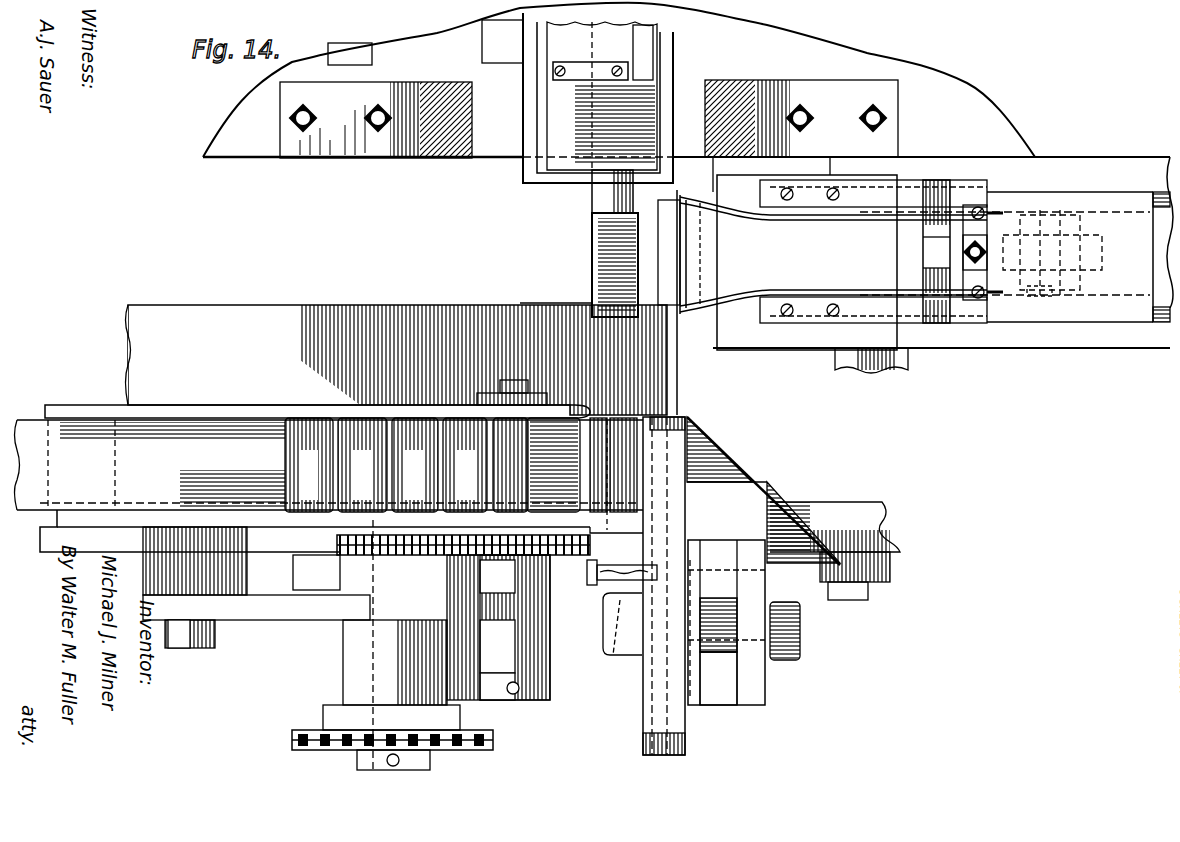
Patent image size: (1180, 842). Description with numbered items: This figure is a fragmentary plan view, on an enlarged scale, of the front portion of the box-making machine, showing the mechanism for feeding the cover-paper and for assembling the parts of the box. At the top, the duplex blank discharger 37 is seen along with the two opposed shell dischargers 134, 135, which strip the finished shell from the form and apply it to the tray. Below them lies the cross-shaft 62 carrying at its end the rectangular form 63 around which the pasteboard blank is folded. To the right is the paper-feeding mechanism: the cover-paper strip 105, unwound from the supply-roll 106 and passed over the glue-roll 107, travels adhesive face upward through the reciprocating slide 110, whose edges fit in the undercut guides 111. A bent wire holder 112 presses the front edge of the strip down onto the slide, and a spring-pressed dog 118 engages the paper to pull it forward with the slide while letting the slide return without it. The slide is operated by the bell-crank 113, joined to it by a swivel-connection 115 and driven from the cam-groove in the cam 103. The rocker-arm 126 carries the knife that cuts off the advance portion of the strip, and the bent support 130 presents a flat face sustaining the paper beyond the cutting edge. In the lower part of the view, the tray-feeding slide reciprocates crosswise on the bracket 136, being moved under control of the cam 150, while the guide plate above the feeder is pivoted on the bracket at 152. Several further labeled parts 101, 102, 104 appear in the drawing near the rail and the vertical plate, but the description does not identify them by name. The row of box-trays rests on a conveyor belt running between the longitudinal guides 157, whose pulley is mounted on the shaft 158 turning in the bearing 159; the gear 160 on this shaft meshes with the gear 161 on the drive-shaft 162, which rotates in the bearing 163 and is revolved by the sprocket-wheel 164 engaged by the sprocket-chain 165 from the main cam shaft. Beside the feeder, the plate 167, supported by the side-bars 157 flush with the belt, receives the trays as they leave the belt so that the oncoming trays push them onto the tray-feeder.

The duplex blank discharger 37 is at (533, 62).
The cross-shaft 62 is at (598, 200).
The rectangular form 63 is at (600, 268).
The plate 101 is at (613, 510).
The rail block 102 is at (592, 357).
The cam 103 is at (406, 465).
The plate 104 is at (667, 683).
The cover-paper strip 105 is at (667, 640).
The supply-roll 106 is at (737, 655).
The glue-roll 107 is at (717, 670).
The reciprocating slide 110 is at (902, 230).
The undercut guides 111 is at (1107, 165).
The bent wire holder 112 is at (690, 247).
The bell-crank 113 is at (1085, 247).
The swivel-connection 115 is at (1058, 290).
The spring-pressed dog 118 is at (927, 280).
The rocker-arm 126 is at (900, 373).
The bent support 130 is at (665, 273).
The shell discharger 134 is at (632, 218).
The shell discharger 135 is at (523, 183).
The bracket 136 is at (673, 475).
The cam 150 is at (329, 465).
The pivot 152 is at (650, 648).
The longitudinal guides 157 is at (223, 410).
The shaft 158 is at (537, 647).
The bearing 159 is at (550, 618).
The gear 160 is at (558, 553).
The gear 161 is at (338, 557).
The drive-shaft 162 is at (373, 662).
The bearing 163 is at (347, 637).
The sprocket-wheel 164 is at (393, 749).
The sprocket-chain 165 is at (478, 728).
The plate 167 is at (557, 446).